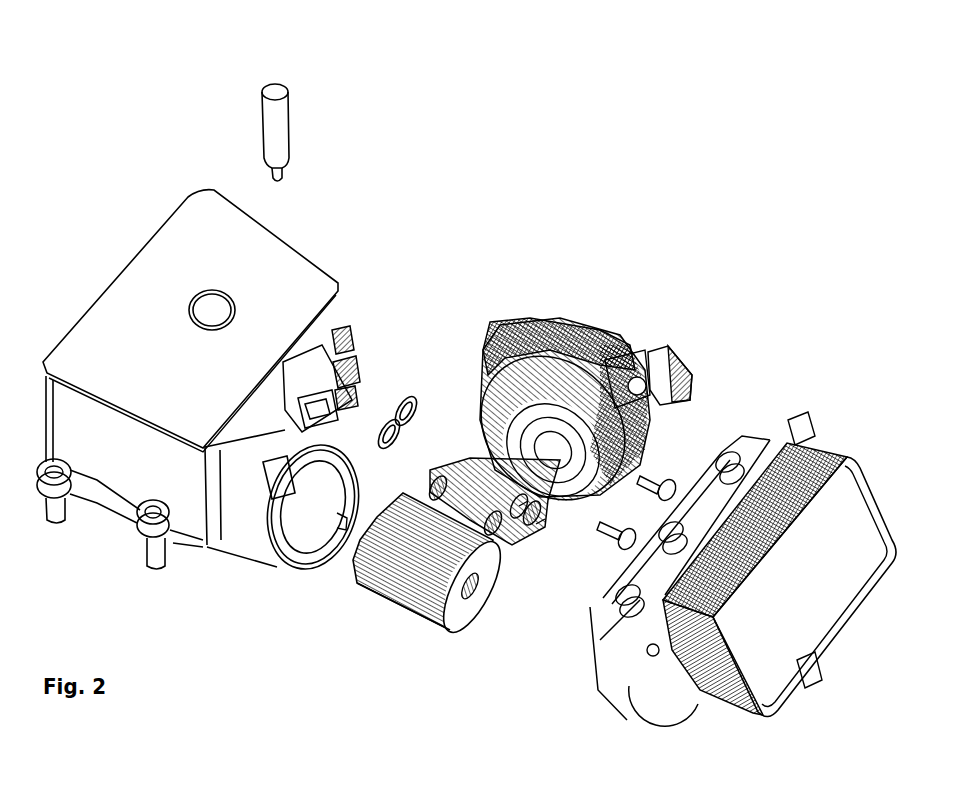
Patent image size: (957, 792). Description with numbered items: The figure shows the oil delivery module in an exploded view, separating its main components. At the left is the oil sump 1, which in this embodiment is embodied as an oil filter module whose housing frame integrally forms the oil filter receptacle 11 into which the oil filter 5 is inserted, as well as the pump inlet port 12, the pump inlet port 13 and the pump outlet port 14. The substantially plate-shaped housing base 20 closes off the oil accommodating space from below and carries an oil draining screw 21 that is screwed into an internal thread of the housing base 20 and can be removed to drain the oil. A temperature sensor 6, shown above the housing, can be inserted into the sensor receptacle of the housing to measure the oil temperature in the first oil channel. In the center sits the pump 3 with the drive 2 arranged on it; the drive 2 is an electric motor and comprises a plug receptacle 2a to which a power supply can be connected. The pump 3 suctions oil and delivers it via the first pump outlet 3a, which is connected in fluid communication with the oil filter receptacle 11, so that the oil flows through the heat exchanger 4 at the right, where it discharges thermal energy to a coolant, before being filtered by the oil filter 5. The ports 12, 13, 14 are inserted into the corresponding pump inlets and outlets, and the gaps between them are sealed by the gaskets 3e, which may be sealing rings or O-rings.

The oil sump 1 is at (192, 211).
The drive 2 is at (530, 374).
The plug receptacle 2a is at (678, 380).
The pump 3 is at (480, 487).
The first pump outlet 3a is at (540, 518).
The gasket 3e is at (392, 417).
The heat exchanger 4 is at (808, 520).
The oil filter 5 is at (420, 610).
The temperature sensor 6 is at (278, 115).
The oil filter receptacle 11 is at (253, 520).
The pump inlet port 12 is at (330, 413).
The pump inlet port 13 is at (347, 376).
The pump outlet port 14 is at (357, 400).
The housing base 20 is at (263, 263).
The oil draining screw 21 is at (203, 307).